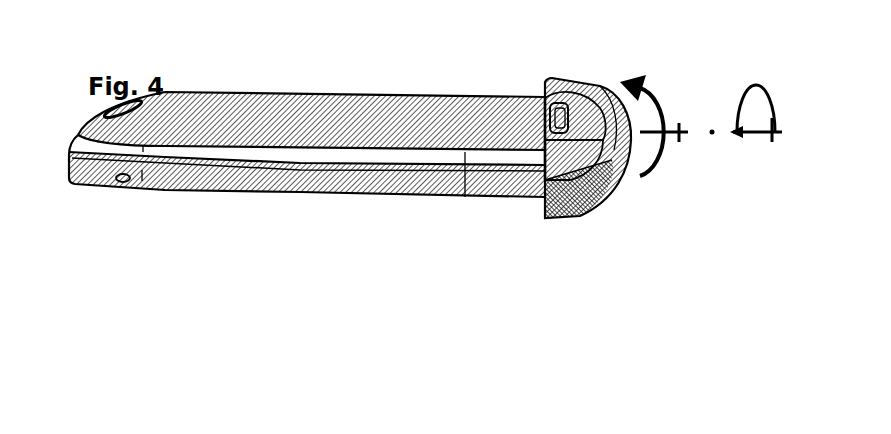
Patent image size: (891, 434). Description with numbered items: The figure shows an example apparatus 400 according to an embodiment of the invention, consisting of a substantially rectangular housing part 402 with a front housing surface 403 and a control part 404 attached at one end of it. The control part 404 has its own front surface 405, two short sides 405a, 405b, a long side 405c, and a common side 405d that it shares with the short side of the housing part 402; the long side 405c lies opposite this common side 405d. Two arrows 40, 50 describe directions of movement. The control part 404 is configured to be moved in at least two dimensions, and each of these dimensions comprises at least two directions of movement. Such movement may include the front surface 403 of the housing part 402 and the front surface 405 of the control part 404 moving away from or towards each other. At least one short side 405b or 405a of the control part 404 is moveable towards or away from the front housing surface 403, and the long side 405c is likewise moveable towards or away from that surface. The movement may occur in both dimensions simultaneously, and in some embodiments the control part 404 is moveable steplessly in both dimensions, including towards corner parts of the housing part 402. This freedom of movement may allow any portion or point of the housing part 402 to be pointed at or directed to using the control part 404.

The mobile device 400 is at (223, 81).
The housing part 402 is at (217, 183).
The front surface of the housing part 403 is at (368, 128).
The control part 404 is at (588, 73).
The front surface of the control part 405 is at (565, 213).
The short side of the control part 405a is at (603, 83).
The short side of the control part 405b is at (603, 200).
The long side of the control part 405c is at (625, 123).
The common side 405d is at (548, 133).
The arrow 50 is at (667, 125).
The arrow 40 is at (783, 108).